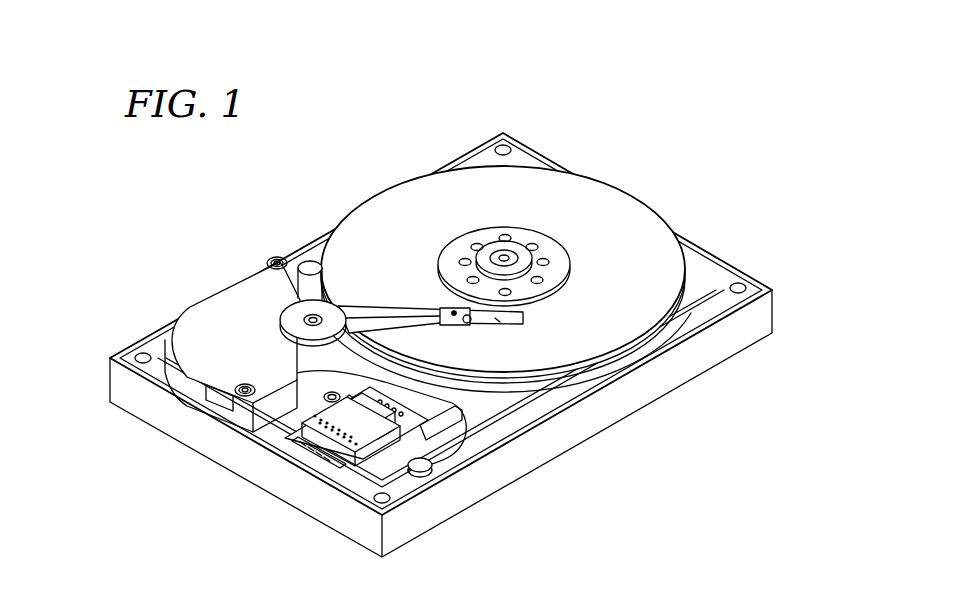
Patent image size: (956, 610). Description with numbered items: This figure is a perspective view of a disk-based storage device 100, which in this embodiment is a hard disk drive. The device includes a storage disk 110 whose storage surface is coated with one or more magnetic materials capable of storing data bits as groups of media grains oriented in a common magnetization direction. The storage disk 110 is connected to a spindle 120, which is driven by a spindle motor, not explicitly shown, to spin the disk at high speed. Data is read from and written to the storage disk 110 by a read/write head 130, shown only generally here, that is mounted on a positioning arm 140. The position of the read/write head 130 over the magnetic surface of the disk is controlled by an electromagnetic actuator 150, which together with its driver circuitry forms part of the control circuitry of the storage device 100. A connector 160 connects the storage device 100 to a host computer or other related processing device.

The disk-based storage device 100 is at (236, 182).
The storage disk 110 is at (613, 200).
The spindle 120 is at (522, 257).
The read/write head 130 is at (496, 318).
The positioning arm 140 is at (371, 305).
The electromagnetic actuator 150 is at (216, 305).
The connector 160 is at (327, 442).